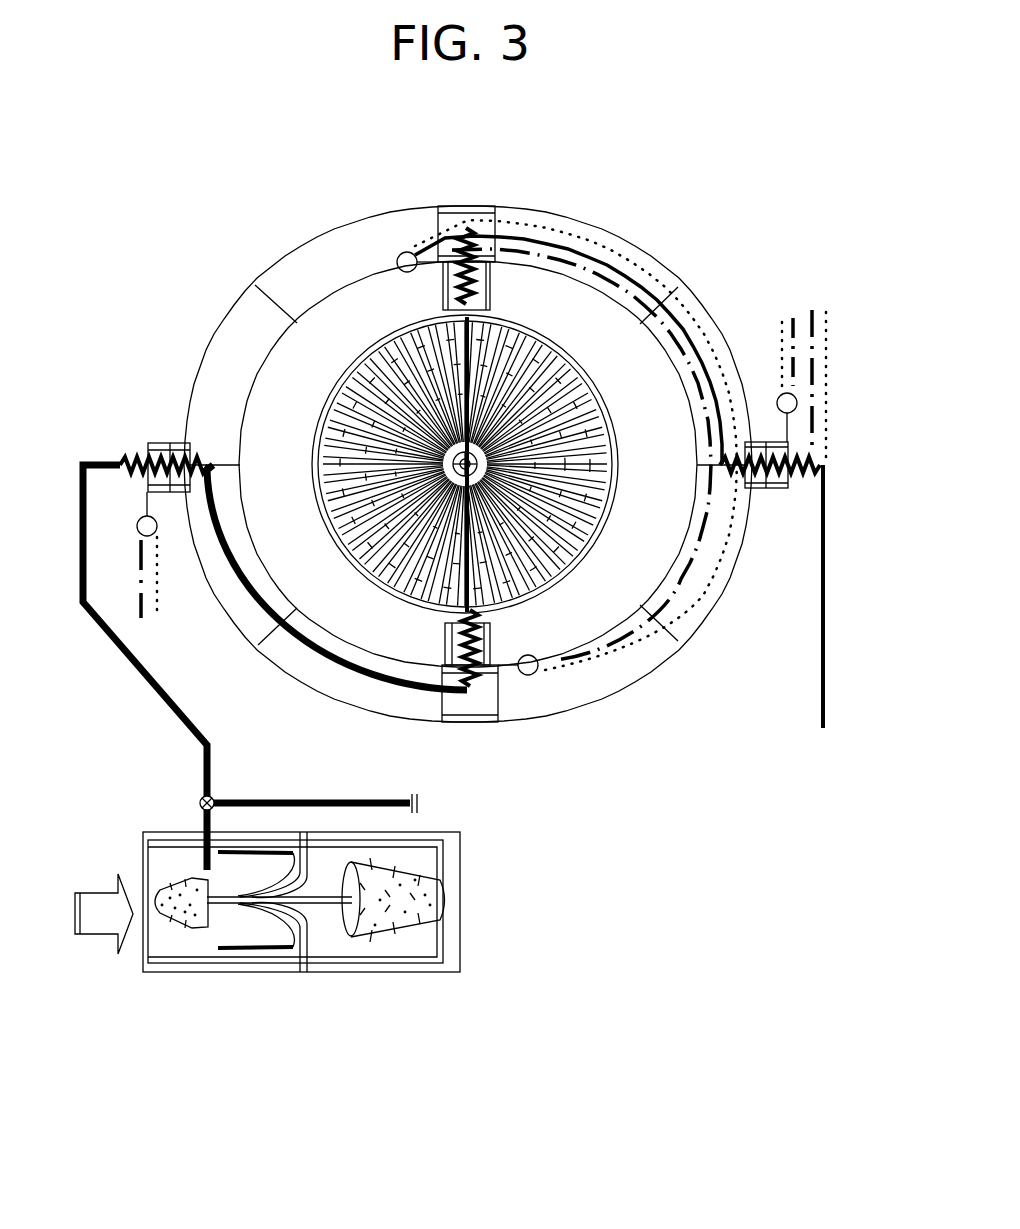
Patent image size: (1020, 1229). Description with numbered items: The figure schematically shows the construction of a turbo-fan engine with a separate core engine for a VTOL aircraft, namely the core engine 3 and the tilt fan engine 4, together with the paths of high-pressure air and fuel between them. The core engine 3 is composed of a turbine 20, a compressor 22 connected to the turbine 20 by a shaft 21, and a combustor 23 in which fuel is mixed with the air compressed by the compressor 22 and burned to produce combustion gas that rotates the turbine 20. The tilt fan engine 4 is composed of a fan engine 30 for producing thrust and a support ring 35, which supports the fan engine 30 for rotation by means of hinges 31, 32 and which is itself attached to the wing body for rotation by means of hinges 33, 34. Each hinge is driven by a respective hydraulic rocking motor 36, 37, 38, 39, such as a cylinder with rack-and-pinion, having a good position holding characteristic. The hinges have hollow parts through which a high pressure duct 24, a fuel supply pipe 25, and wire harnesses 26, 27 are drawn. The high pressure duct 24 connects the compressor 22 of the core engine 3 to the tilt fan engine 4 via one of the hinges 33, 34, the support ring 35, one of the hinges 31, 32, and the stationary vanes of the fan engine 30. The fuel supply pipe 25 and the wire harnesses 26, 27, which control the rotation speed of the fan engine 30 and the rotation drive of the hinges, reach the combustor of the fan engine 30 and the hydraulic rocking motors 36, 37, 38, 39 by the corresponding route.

The core engine 3 is at (167, 812).
The tilt fan engine 4 is at (232, 258).
The turbine 20 is at (433, 980).
The shaft 21 is at (293, 895).
The compressor 22 is at (208, 980).
The combustor 23 is at (338, 980).
The high pressure duct 24 is at (180, 722).
The fuel supply pipe 25 is at (637, 280).
The wire harness 26 is at (610, 280).
The wire harness 27 is at (675, 297).
The fan engine 30 is at (625, 422).
The hinge 31 is at (492, 283).
The hinge 32 is at (495, 633).
The hinge 33 is at (162, 437).
The hinge 34 is at (762, 490).
The support ring 35 is at (707, 613).
The hydraulic rocking motor 36 is at (405, 272).
The hydraulic rocking motor 37 is at (528, 677).
The hydraulic rocking motor 38 is at (137, 520).
The hydraulic rocking motor 39 is at (778, 396).